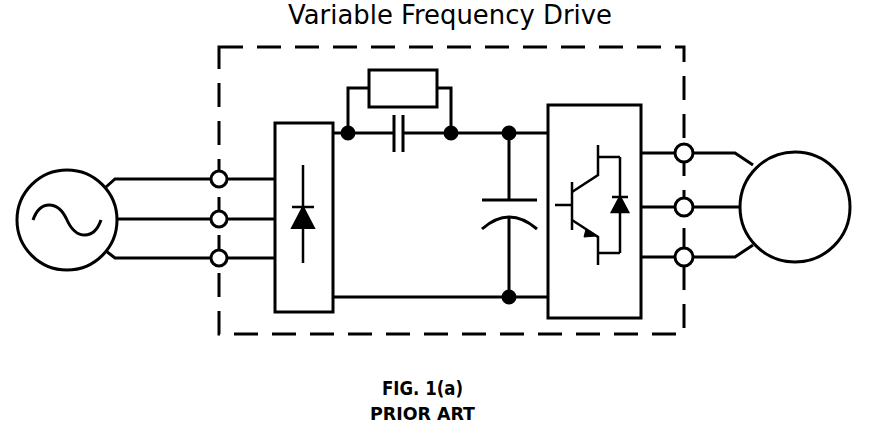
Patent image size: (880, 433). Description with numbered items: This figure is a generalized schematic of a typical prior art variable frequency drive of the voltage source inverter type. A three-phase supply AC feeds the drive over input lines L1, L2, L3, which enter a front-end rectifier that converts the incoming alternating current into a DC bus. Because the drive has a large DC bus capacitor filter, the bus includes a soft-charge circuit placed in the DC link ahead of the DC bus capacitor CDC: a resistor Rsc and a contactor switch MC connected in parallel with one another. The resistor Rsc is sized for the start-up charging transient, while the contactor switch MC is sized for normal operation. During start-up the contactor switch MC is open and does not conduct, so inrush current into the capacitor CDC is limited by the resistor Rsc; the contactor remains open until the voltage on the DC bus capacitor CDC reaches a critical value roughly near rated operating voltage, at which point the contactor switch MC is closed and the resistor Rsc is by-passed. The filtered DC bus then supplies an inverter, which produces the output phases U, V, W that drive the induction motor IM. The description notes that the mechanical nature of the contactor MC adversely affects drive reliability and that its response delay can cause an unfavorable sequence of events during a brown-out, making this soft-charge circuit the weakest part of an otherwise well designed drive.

The three-phase AC source AC is at (67, 220).
The input phase line L1 is at (190, 170).
The input phase line L2 is at (196, 210).
The input phase line L3 is at (190, 249).
The diode rectifier is at (304, 217).
The resistor Rsc is at (399, 101).
The contactor switch MC is at (399, 152).
The DC bus capacitor CDC is at (487, 215).
The IGBT inverter is at (594, 211).
The output phase U is at (697, 146).
The output phase V is at (690, 198).
The output phase W is at (697, 248).
The induction motor IM is at (795, 207).